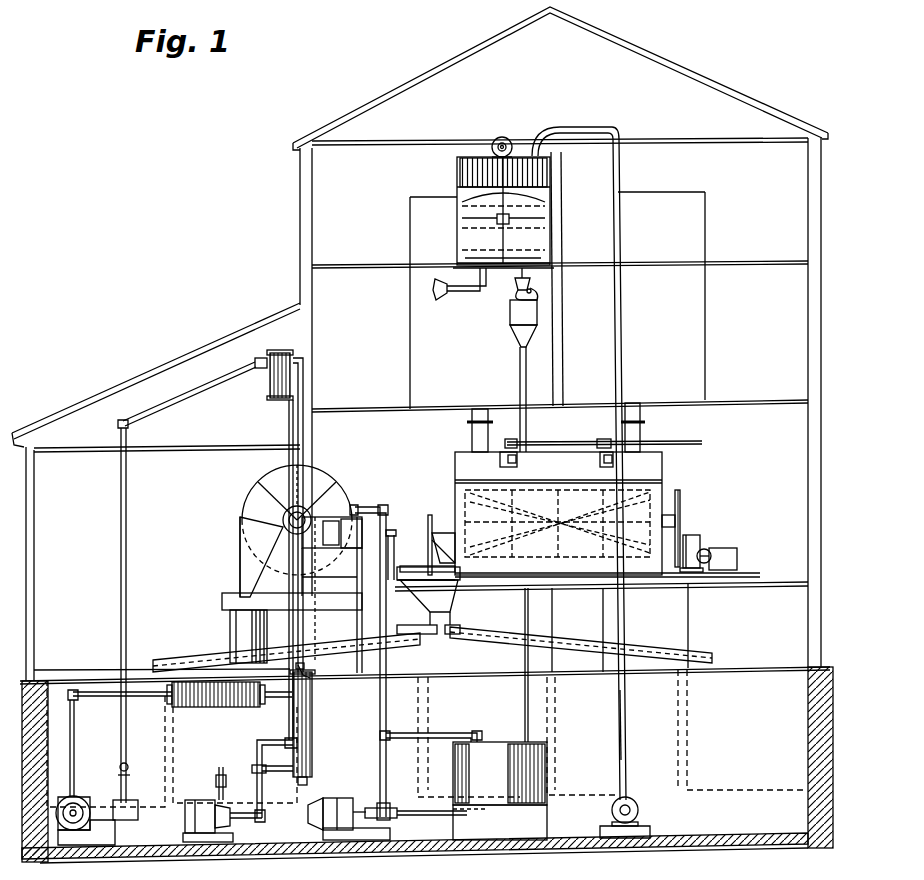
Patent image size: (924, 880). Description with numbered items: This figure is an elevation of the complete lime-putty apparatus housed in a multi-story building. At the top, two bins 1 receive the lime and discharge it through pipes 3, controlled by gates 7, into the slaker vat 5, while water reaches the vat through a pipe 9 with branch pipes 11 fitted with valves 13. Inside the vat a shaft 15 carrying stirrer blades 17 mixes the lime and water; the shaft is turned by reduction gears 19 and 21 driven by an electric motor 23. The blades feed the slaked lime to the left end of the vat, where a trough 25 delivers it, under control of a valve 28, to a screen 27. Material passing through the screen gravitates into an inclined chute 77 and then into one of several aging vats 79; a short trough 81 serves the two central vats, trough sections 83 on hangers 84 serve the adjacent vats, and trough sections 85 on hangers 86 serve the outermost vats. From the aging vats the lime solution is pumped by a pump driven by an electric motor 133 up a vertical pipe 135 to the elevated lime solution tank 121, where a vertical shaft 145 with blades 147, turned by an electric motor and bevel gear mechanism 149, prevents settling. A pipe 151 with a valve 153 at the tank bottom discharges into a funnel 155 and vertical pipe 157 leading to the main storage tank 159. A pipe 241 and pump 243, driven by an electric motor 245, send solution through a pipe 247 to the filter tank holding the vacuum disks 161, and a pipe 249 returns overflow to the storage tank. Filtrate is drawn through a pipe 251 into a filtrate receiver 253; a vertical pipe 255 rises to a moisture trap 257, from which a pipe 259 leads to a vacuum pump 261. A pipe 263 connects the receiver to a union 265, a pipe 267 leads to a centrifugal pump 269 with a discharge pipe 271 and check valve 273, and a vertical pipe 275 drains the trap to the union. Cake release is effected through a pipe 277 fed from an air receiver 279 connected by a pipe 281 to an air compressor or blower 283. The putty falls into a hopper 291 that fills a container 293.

The bins 1 is at (410, 341).
The pipes 3 is at (472, 435).
The slaker vat 5 is at (660, 486).
The gates 7 is at (470, 421).
The pipe 9 is at (690, 441).
The branch pipes 11 is at (500, 461).
The valves 13 is at (516, 459).
The shaft 15 is at (524, 521).
The stirrer blades 17 is at (557, 523).
The reduction gear 19 is at (680, 508).
The reduction gear 21 is at (690, 538).
The electric motor 23 is at (714, 548).
The trough 25 is at (450, 566).
The screen 27 is at (450, 583).
The valve 28 is at (430, 514).
The inclined chute 77 is at (434, 600).
The aging vats 79 is at (467, 683).
The short trough 81 is at (434, 636).
The trough sections 83 is at (365, 630).
The hangers 84 is at (474, 604).
The trough sections 85 is at (205, 658).
The hangers 86 is at (603, 609).
The lime solution tank 121 is at (457, 179).
The electric motor 133 is at (638, 803).
The vertical pipe 135 is at (625, 721).
The vertical shaft 145 is at (508, 198).
The blades 147 is at (545, 219).
The electric motor and bevel gear mechanism 149 is at (508, 134).
The pipe 151 is at (526, 275).
The valve 153 is at (538, 298).
The funnel 155 is at (530, 318).
The vertical pipe 157 is at (527, 378).
The main storage tank 159 is at (548, 766).
The disks 161 is at (338, 482).
The pipe 241 is at (414, 816).
The pump 243 is at (376, 804).
The electric motor 245 is at (340, 802).
The pipe 247 is at (380, 733).
The pipe 249 is at (395, 549).
The pipe 251 is at (306, 671).
The filtrate receiver 253 is at (312, 707).
The vertical pipe 255 is at (304, 401).
The moisture trap 257 is at (292, 374).
The pipe 259 is at (180, 395).
The vacuum pump 261 is at (134, 802).
The pipe 263 is at (276, 772).
The union 265 is at (253, 768).
The pipe 267 is at (257, 791).
The centrifugal pump 269 is at (212, 830).
The discharge pipe 271 is at (220, 774).
The check valve 273 is at (215, 788).
The vertical pipe 275 is at (288, 430).
The pipe 277 is at (250, 556).
The air receiver 279 is at (210, 707).
The pipe 281 is at (92, 700).
The air compressor or blower 283 is at (88, 800).
The hopper 291 is at (246, 540).
The container 293 is at (233, 625).